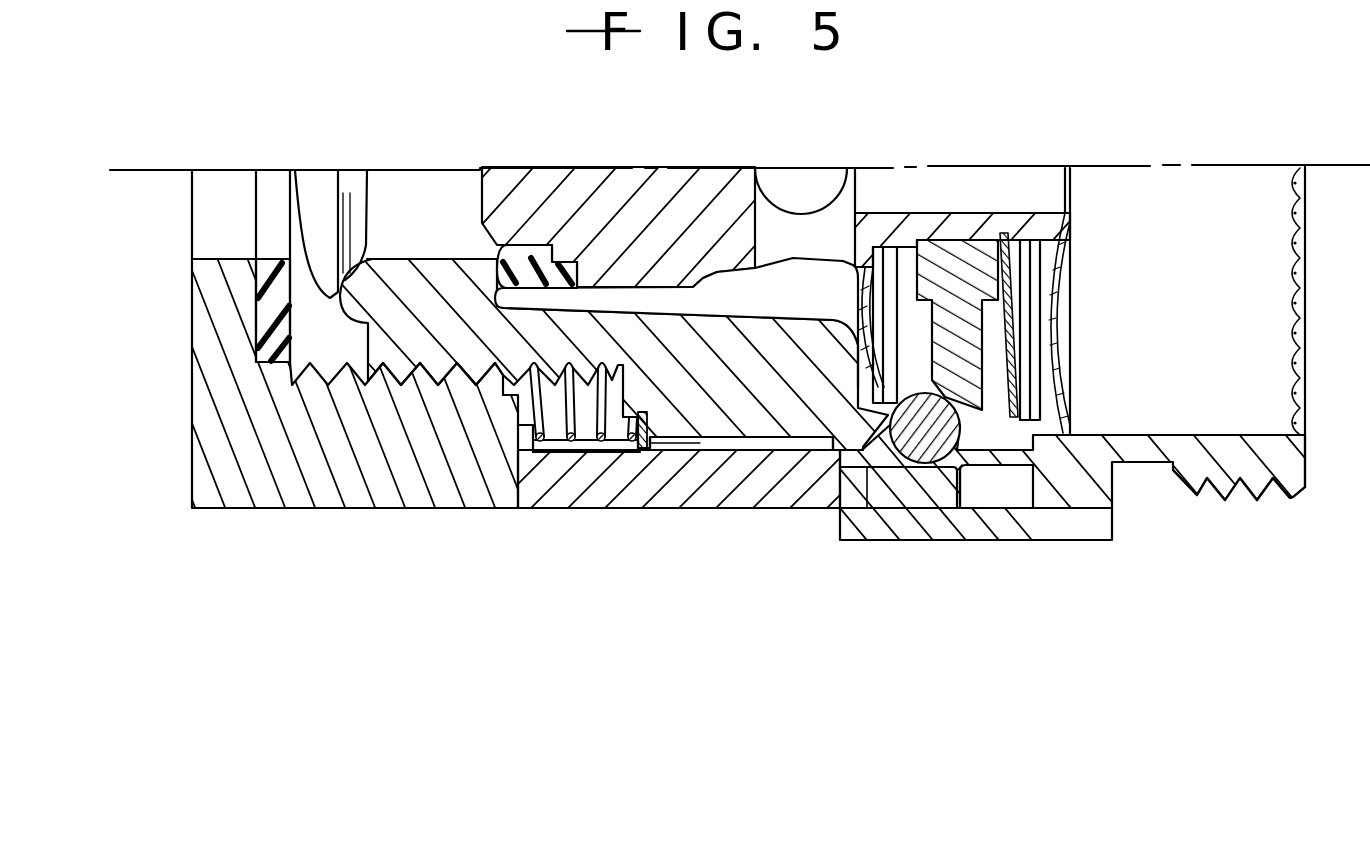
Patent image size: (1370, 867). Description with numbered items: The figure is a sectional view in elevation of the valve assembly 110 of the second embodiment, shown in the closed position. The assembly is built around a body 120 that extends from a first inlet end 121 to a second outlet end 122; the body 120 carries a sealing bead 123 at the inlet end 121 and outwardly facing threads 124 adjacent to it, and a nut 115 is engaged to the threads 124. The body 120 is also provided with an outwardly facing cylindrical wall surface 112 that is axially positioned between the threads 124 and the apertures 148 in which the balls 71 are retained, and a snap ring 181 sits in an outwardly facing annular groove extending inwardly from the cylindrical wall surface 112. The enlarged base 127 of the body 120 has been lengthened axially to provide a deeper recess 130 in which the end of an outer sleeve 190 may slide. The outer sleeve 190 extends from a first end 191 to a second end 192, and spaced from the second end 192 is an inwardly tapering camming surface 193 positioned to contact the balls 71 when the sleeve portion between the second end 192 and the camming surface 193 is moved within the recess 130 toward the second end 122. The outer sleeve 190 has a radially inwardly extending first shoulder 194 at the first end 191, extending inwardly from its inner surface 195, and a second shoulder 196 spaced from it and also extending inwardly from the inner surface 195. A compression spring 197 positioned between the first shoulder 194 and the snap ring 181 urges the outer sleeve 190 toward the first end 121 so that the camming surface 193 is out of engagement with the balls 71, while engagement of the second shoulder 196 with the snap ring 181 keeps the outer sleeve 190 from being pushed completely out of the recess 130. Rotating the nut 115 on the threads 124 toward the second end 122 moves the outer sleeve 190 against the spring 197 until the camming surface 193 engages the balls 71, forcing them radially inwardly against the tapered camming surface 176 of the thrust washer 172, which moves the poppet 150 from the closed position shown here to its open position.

The balls 71 is at (917, 443).
The valve assembly 110 is at (628, 564).
The outwardly facing cylindrical wall surface 112 is at (790, 440).
The nut 115 is at (237, 485).
The body 120 is at (418, 258).
The first inlet end 121 is at (357, 268).
The second outlet end 122 is at (1305, 462).
The sealing bead 123 is at (312, 273).
The outwardly facing threads 124 is at (527, 358).
The enlarged base 127 is at (1083, 530).
The recess 130 is at (993, 490).
The apertures 148 is at (1018, 483).
The poppet 150 is at (700, 168).
The thrust washer 172 is at (960, 330).
The tapered camming surface 176 is at (943, 390).
The snap ring 181 is at (647, 430).
The outer sleeve 190 is at (720, 508).
The first end 191 is at (545, 452).
The second end 192 is at (963, 492).
The inwardly tapering camming surface 193 is at (905, 453).
The first shoulder 194 is at (522, 442).
The inner surface 195 is at (598, 450).
The second shoulder 196 is at (693, 437).
The compression spring 197 is at (573, 440).